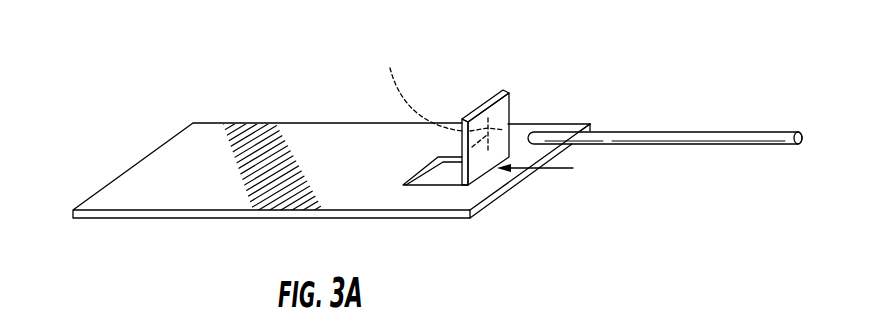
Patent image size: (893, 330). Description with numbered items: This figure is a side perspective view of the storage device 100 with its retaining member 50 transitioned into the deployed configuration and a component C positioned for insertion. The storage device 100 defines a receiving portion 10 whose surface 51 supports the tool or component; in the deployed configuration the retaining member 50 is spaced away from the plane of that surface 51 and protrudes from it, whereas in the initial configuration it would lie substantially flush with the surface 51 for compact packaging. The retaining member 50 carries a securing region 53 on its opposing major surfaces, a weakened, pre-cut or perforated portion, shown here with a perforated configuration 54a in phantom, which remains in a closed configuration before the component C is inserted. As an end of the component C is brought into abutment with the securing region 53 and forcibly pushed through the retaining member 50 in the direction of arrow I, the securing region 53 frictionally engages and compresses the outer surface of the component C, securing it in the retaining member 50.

The storage device 100 is at (82, 115).
The receiving portion 10 is at (244, 123).
The surface 51 is at (443, 202).
The retaining member 50 is at (497, 96).
The securing region 53 is at (503, 108).
The perforated configuration 54a is at (438, 94).
The component C is at (688, 132).
The arrow I is at (547, 170).